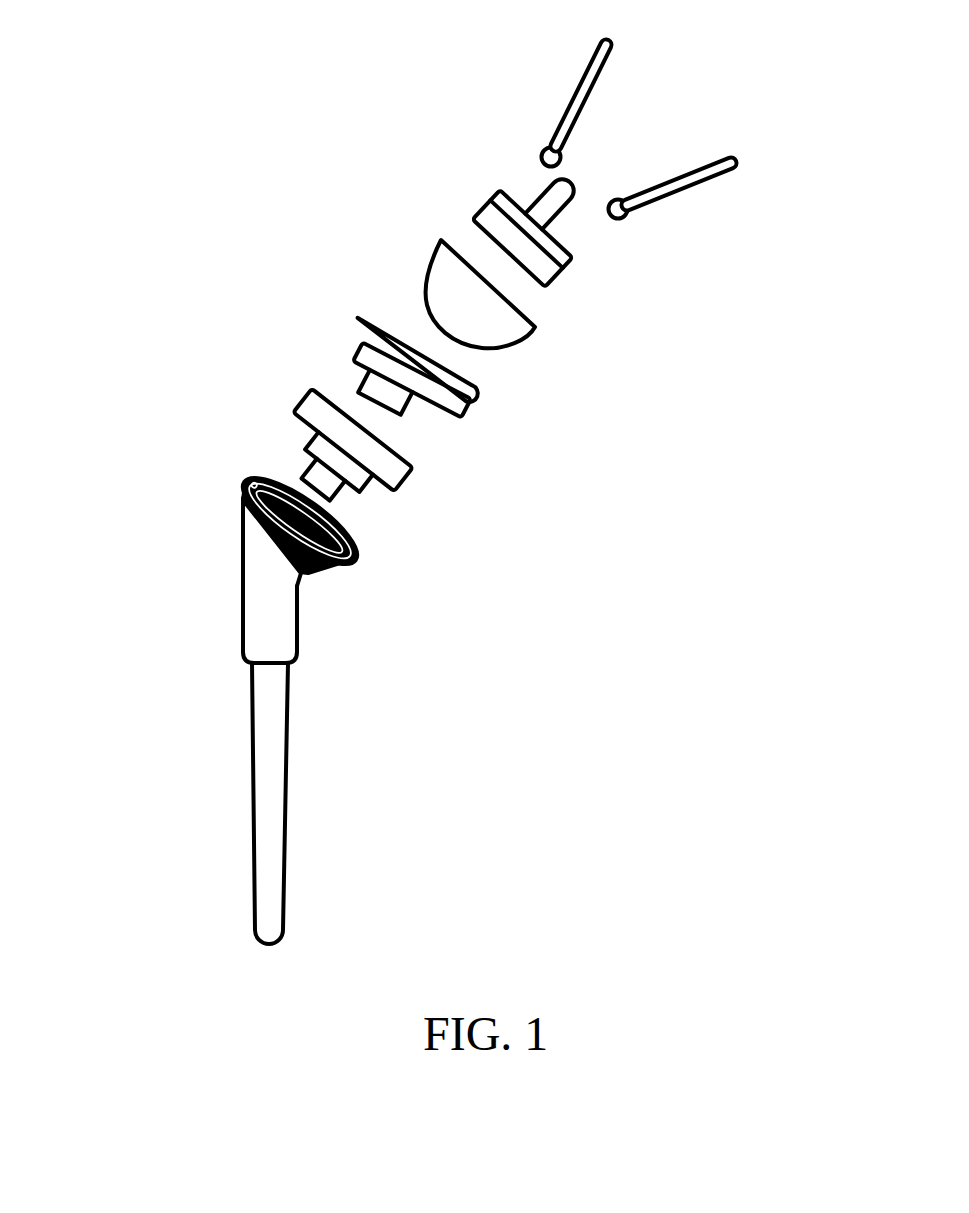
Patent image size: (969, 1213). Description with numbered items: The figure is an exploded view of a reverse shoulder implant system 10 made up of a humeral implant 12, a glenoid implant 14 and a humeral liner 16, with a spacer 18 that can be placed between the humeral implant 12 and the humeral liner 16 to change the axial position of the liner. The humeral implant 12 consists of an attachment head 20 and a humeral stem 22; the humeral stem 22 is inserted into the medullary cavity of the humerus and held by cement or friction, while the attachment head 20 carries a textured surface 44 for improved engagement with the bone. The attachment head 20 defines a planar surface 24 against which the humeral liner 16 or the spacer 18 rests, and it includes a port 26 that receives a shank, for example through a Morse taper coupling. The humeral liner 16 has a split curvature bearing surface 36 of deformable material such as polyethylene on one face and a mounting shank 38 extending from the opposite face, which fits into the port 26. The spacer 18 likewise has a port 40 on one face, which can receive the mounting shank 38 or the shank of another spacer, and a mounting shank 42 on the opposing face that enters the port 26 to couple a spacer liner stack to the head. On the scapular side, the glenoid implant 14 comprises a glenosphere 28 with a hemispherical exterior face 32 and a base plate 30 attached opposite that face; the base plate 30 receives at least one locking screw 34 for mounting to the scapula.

The reverse shoulder implant system 10 is at (178, 238).
The humeral implant 12 is at (186, 633).
The glenoid implant 14 is at (584, 308).
The humeral liner 16 is at (363, 378).
The spacer 18 is at (413, 466).
The attachment head 20 is at (327, 572).
The humeral stem 22 is at (253, 868).
The planar surface 24 is at (250, 484).
The port 26 is at (329, 527).
The glenosphere 28 is at (428, 266).
The base plate 30 is at (490, 205).
The exterior face 32 is at (490, 318).
The locking screw 34 is at (575, 92).
The split curvature bearing surface 36 is at (455, 377).
The mounting shank 38 is at (385, 392).
The port 40 is at (339, 462).
The mounting shank 42 is at (323, 480).
The textured surface 44 is at (290, 600).